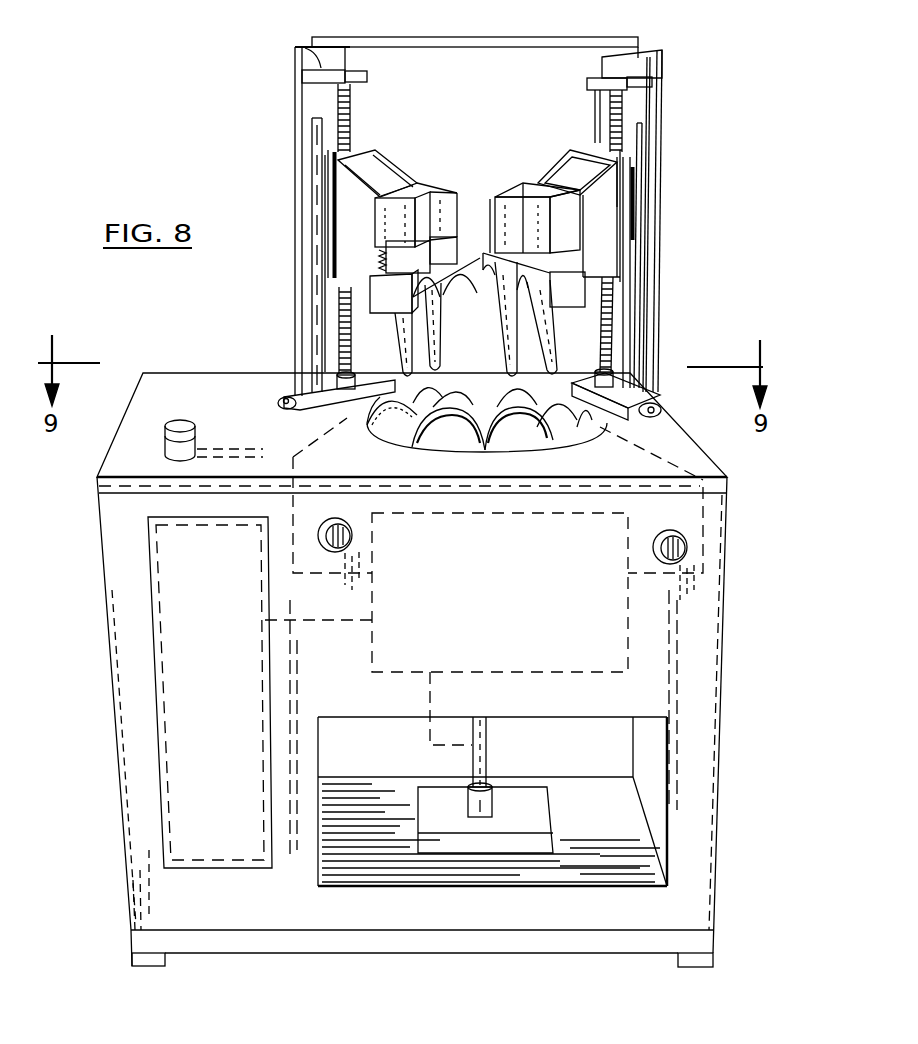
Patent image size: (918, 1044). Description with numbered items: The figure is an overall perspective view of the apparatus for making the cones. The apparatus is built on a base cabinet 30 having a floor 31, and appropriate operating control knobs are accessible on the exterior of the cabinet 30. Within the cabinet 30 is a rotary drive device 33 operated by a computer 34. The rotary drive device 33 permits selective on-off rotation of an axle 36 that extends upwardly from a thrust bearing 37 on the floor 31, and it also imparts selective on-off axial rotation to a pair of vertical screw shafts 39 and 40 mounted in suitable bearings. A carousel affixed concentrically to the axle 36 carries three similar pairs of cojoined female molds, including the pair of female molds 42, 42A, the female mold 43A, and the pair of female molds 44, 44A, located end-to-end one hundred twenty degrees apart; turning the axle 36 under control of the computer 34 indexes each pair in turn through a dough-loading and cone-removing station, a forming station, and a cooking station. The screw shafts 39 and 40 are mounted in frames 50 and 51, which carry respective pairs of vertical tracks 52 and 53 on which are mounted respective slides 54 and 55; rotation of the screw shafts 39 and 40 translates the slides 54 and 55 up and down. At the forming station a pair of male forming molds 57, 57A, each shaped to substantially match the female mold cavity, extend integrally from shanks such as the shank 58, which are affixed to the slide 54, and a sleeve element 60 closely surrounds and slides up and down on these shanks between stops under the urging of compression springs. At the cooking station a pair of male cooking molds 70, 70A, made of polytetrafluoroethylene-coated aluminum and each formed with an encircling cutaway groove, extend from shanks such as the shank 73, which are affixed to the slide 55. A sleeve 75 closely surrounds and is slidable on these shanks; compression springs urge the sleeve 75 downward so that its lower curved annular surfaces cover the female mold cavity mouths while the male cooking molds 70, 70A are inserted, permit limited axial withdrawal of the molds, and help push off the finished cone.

The base cabinet 30 is at (745, 681).
The floor 31 is at (632, 833).
The rotary drive device 33 is at (487, 627).
The computer 34 is at (190, 696).
The axle 36 is at (483, 760).
The thrust bearing 37 is at (494, 807).
The vertical screw shaft 39 is at (342, 110).
The vertical screw shaft 40 is at (622, 122).
The female mold 42 is at (445, 447).
The female mold 42A is at (518, 447).
The female mold 43A is at (450, 397).
The female mold 44 is at (575, 376).
The female mold 44A is at (610, 430).
The frame 50 is at (302, 47).
The frame 51 is at (632, 64).
The vertical tracks 52 is at (308, 200).
The vertical tracks 53 is at (630, 307).
The slide 54 is at (350, 187).
The slide 55 is at (606, 223).
The male forming mold 57 is at (403, 338).
The male forming mold 57A is at (436, 342).
The shank 58 is at (393, 210).
The sleeve element 60 is at (387, 293).
The male cooking mold 70 is at (503, 203).
The male cooking mold 70A is at (550, 347).
The shank 73 is at (511, 178).
The sleeve 75 is at (577, 285).